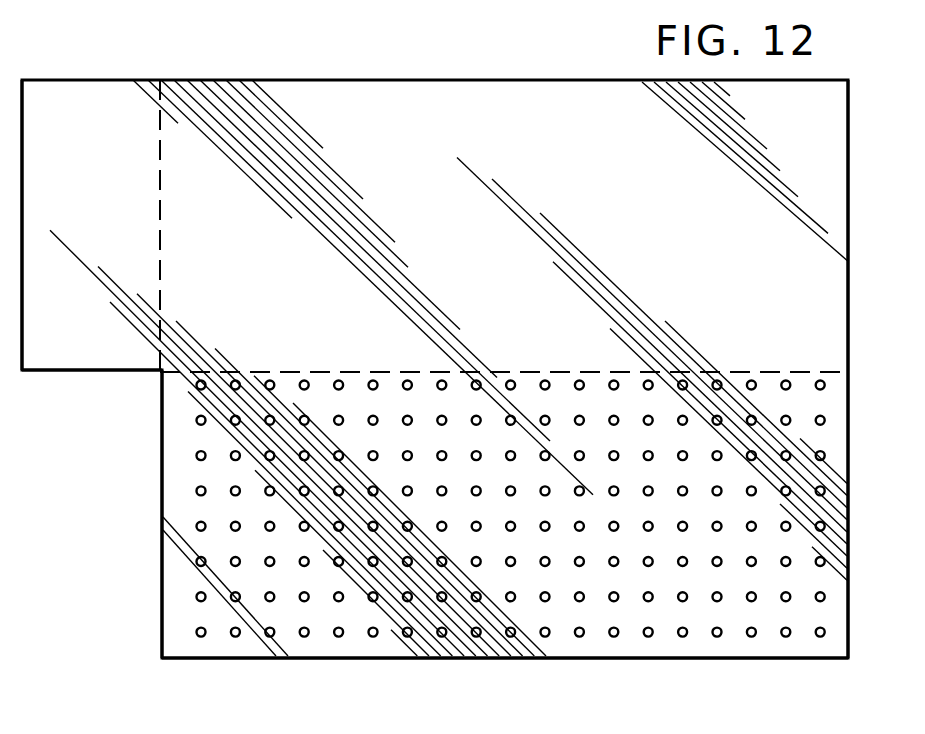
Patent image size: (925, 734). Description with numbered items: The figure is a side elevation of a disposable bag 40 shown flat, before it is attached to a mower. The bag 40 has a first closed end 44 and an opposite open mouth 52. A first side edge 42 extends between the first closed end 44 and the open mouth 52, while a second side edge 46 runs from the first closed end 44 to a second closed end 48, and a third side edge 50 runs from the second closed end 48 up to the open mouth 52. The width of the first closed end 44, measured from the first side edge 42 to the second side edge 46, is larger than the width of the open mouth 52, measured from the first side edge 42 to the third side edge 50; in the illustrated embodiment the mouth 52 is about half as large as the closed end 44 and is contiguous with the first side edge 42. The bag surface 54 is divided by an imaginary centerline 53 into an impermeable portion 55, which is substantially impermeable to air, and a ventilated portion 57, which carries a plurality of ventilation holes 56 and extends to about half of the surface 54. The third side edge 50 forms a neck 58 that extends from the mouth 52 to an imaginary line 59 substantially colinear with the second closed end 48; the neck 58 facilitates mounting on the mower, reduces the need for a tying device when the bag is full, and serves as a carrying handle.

The disposable bag 40 is at (391, 670).
The first side edge 42 is at (177, 82).
The first closed end 44 is at (849, 610).
The second side edge 46 is at (678, 660).
The second closed end 48 is at (162, 532).
The third side edge 50 is at (100, 372).
The open mouth 52 is at (25, 343).
The imaginary centerline 53 is at (757, 372).
The bag surface 54 is at (498, 266).
The impermeable portion 55 is at (578, 122).
The ventilation holes 56 is at (266, 374).
The ventilated portion 57 is at (523, 518).
The neck 58 is at (74, 505).
The imaginary line 59 is at (160, 124).